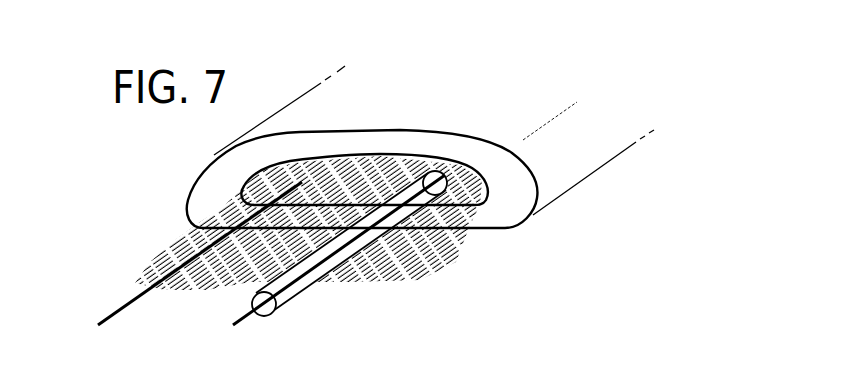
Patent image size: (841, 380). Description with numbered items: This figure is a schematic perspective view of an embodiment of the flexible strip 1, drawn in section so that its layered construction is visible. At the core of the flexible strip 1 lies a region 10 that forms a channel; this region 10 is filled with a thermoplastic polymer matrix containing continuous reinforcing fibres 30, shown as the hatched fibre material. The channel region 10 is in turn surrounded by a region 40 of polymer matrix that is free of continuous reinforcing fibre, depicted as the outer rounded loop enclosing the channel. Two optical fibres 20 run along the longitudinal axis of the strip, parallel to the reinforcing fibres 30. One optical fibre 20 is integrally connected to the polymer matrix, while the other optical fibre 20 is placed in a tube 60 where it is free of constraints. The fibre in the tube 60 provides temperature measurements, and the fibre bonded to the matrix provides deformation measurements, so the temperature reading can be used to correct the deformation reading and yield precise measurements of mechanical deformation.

The flexible strip 1 is at (520, 66).
The region forming a channel 10 is at (474, 208).
The optical fibre 20 is at (122, 308).
The continuous reinforcing fibres 30 is at (163, 248).
The region of polymer matrix free of continuous reinforcing fibre 40 is at (525, 204).
The tube 60 is at (302, 292).